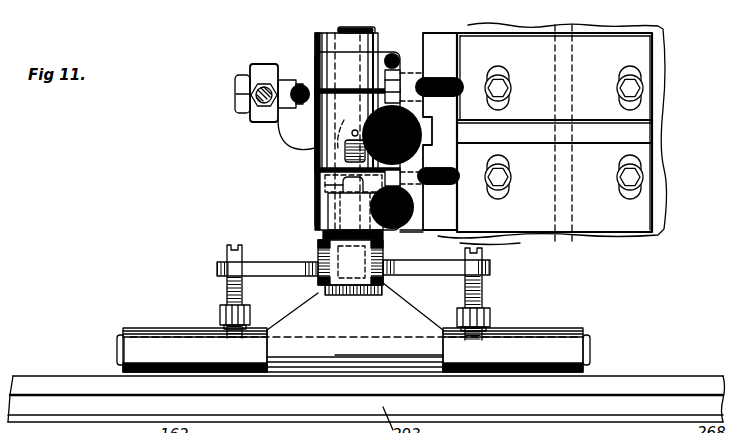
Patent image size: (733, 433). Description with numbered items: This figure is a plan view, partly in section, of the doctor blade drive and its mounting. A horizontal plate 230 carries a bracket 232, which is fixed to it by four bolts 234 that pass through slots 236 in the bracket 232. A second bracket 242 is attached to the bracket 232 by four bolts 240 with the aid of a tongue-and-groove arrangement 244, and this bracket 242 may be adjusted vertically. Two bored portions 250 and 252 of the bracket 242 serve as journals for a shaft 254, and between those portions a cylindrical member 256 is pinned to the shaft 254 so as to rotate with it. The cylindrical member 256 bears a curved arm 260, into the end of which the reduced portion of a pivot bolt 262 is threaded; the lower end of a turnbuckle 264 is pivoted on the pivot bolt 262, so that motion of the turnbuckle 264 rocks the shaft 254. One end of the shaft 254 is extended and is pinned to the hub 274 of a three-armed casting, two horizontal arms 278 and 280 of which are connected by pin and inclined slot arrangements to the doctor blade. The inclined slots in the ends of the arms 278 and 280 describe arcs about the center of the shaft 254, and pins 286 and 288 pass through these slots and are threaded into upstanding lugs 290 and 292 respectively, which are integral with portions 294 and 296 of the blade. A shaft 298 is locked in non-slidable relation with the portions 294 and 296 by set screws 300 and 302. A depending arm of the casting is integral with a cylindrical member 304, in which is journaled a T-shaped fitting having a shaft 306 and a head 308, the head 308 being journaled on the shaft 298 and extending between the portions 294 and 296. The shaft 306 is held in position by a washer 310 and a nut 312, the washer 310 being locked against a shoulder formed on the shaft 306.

The horizontal plate 230 is at (661, 238).
The bracket 232 is at (588, 223).
The bolts 234 is at (508, 82).
The slots 236 is at (505, 104).
The bolts 240 is at (410, 105).
The bracket 242 is at (410, 228).
The tongue-and-groove arrangement 244 is at (442, 147).
The bored portion 250 is at (315, 72).
The bored portion 252 is at (315, 206).
The shaft 254 is at (327, 236).
The cylindrical member 256 is at (313, 160).
The curved arm 260 is at (295, 133).
The pivot bolt 262 is at (245, 110).
The turnbuckle 264 is at (262, 67).
The hub 274 is at (320, 284).
The horizontal arm 278 is at (262, 268).
The horizontal arm 280 is at (422, 270).
The pin 286 is at (228, 289).
The pin 288 is at (478, 284).
The upstanding lug 290 is at (220, 318).
The upstanding lug 292 is at (492, 318).
The portion of the blade 294 is at (150, 332).
The portion of the blade 296 is at (572, 332).
The shaft 298 is at (324, 338).
The set screw 300 is at (203, 372).
The set screw 302 is at (538, 372).
The cylindrical member 304 is at (401, 231).
The shaft 306 is at (388, 283).
The head 308 is at (362, 355).
The washer 310 is at (315, 190).
The nut 312 is at (352, 124).